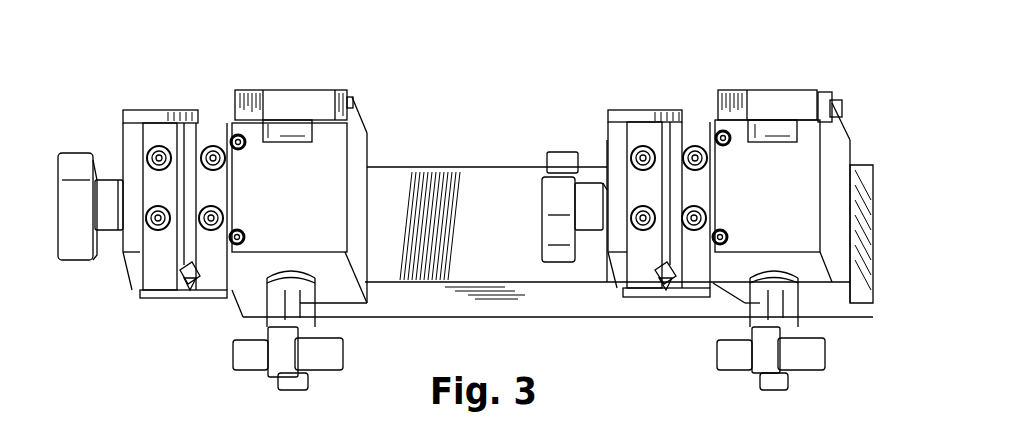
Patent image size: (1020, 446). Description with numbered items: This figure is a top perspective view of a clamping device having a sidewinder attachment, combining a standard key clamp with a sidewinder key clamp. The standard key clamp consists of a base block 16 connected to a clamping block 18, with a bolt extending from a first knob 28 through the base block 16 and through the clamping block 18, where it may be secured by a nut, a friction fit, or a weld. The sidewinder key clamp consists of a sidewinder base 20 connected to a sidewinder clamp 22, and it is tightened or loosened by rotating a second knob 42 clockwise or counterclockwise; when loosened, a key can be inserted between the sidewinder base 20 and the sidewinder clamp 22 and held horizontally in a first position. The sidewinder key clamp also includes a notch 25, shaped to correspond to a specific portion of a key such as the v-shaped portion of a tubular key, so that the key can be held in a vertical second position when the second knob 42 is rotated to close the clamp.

The base block 16 is at (813, 150).
The clamping block 18 is at (293, 100).
The sidewinder base 20 is at (211, 123).
The sidewinder clamp 22 is at (160, 147).
The notch 25 is at (184, 278).
The first knob 28 is at (800, 360).
The second knob 42 is at (76, 167).